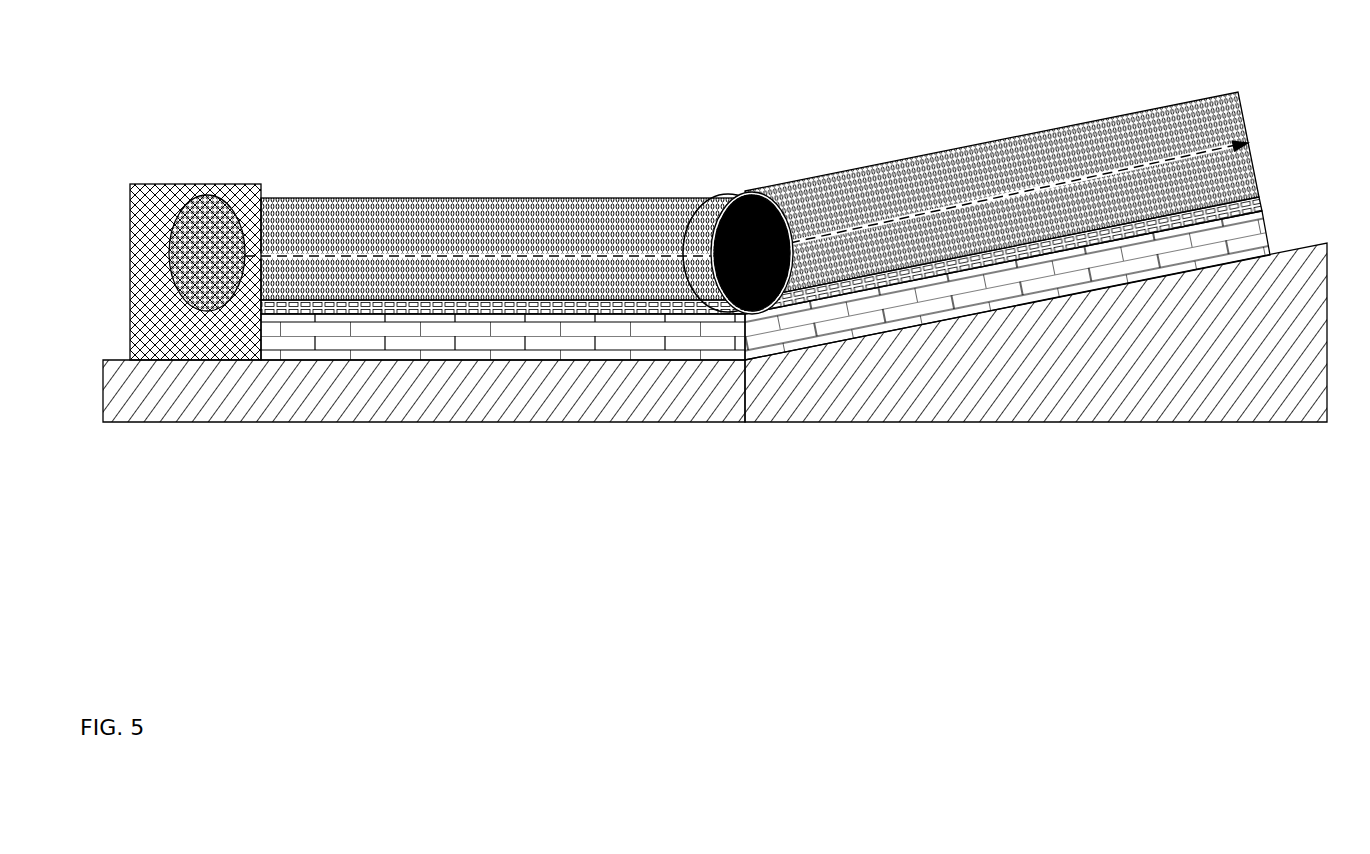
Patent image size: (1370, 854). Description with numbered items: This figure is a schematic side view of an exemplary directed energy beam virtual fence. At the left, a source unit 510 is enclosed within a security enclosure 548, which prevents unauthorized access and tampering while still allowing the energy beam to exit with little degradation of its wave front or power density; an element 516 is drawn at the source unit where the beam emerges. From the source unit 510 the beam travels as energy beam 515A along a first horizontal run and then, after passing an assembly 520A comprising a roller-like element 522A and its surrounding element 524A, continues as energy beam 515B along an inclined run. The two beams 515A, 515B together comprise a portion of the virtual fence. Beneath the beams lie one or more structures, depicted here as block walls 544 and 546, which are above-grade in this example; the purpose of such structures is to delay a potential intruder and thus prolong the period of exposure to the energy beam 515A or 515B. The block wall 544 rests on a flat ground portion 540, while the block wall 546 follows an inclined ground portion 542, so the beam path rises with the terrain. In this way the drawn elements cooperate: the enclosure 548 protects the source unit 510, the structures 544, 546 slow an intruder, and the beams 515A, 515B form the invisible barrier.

The source unit 510 is at (176, 150).
The optical fiber 516 is at (175, 217).
The security enclosure 548 is at (233, 184).
The energy beam 515A is at (402, 198).
The energy beam 515B is at (1042, 130).
The roller assembly 520A is at (727, 173).
The roller 522A is at (770, 195).
The roller sheath 524A is at (718, 195).
The base surface 540 is at (130, 360).
The inclined surface 542 is at (1283, 250).
The block wall 544 is at (467, 332).
The block wall 546 is at (885, 322).